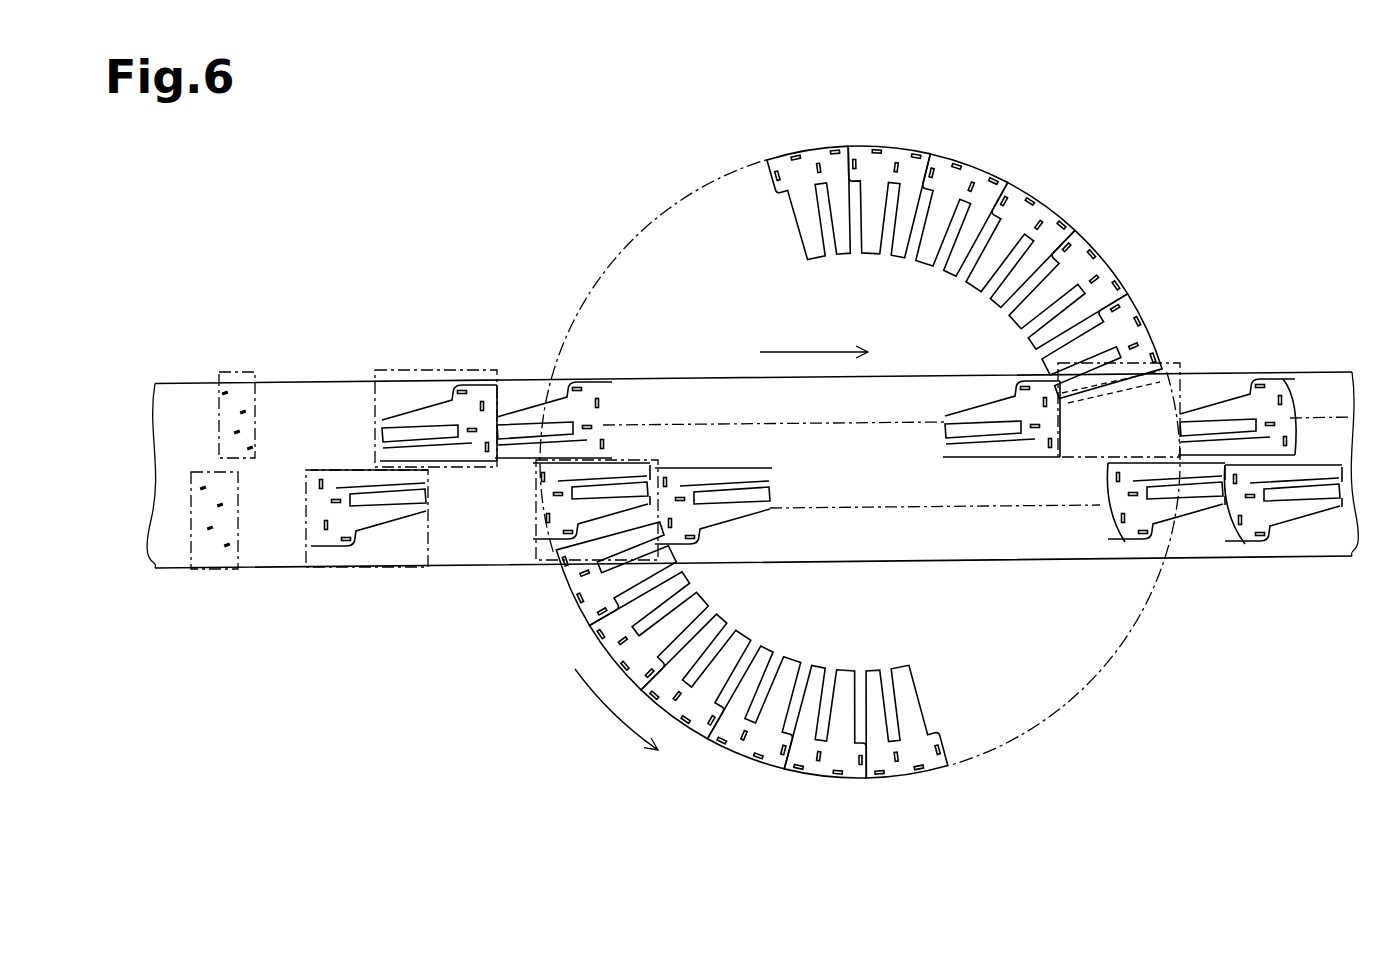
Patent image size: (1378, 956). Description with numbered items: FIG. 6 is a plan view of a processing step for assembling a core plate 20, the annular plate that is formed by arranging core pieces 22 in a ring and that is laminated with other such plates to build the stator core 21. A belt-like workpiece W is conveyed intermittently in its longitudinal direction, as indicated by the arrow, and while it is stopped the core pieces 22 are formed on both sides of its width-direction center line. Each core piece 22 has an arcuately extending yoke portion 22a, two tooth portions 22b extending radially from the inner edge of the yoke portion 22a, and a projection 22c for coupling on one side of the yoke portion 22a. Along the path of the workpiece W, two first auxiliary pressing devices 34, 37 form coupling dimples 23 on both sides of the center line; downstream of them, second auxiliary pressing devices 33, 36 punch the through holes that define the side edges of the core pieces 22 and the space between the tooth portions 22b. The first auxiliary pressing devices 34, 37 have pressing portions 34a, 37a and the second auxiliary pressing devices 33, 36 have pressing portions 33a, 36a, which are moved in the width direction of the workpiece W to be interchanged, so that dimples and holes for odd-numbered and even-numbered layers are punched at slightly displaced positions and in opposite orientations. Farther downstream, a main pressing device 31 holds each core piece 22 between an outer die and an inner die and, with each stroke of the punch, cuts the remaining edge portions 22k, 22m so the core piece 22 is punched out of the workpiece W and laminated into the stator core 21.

The core plate 20 is at (879, 465).
The stator core 21 is at (853, 778).
The core piece 22 is at (953, 152).
The yoke portion 22a is at (502, 398).
The tooth portion 22b is at (417, 417).
The projection 22c is at (468, 385).
The remaining edge portion 22k is at (845, 252).
The remaining edge portion 22m is at (813, 150).
The coupling dimple 23 is at (250, 447).
The main pressing device 31 is at (618, 258).
The second auxiliary pressing device 33 is at (407, 570).
The pressing portion 33a is at (444, 562).
The first auxiliary pressing device 34 is at (240, 558).
The pressing portion 34a is at (188, 556).
The second auxiliary pressing device 36 is at (418, 370).
The pressing portion 36a is at (374, 371).
The first auxiliary pressing device 37 is at (263, 402).
The pressing portion 37a is at (220, 393).
The workpiece W is at (677, 378).